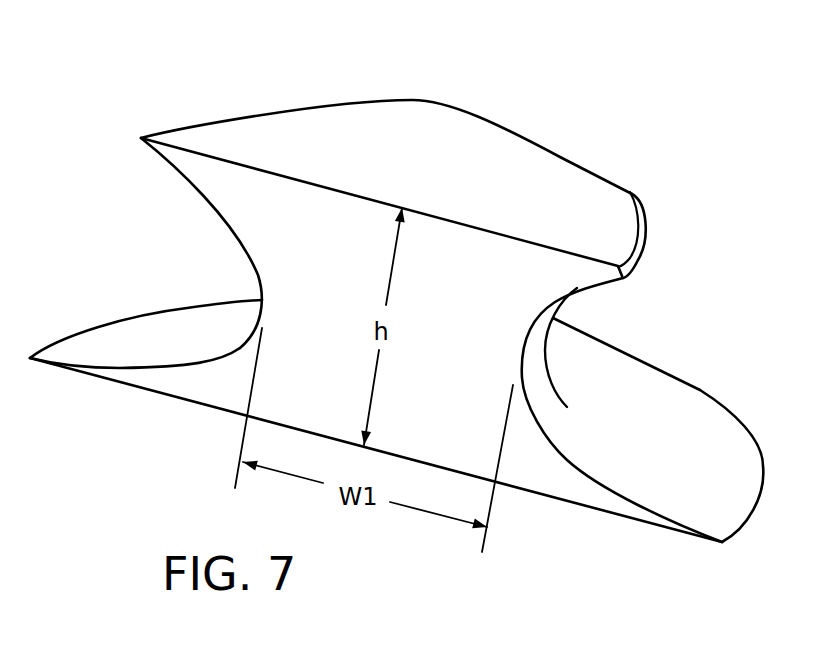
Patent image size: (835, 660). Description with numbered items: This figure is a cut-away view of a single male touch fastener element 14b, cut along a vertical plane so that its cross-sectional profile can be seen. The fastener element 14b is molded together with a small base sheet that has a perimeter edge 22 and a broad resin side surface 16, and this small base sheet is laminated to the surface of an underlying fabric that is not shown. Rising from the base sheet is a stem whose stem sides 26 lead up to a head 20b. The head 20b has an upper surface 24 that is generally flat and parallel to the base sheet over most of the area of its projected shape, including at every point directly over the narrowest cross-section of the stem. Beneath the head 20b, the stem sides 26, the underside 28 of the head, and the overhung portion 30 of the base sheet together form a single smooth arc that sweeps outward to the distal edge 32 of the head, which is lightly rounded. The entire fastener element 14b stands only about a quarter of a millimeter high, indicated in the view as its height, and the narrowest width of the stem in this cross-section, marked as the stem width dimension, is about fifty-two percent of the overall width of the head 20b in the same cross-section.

The fastener element 14b is at (422, 277).
The distal edge 32 is at (267, 115).
The upper surface 24 is at (502, 137).
The head 20b is at (645, 217).
The underside of the head 28 is at (168, 168).
The overhung portion of the base sheet 30 is at (200, 358).
The stem sides 26 is at (547, 345).
The side surface of the base sheet 16 is at (693, 400).
The perimeter edge 22 is at (765, 460).